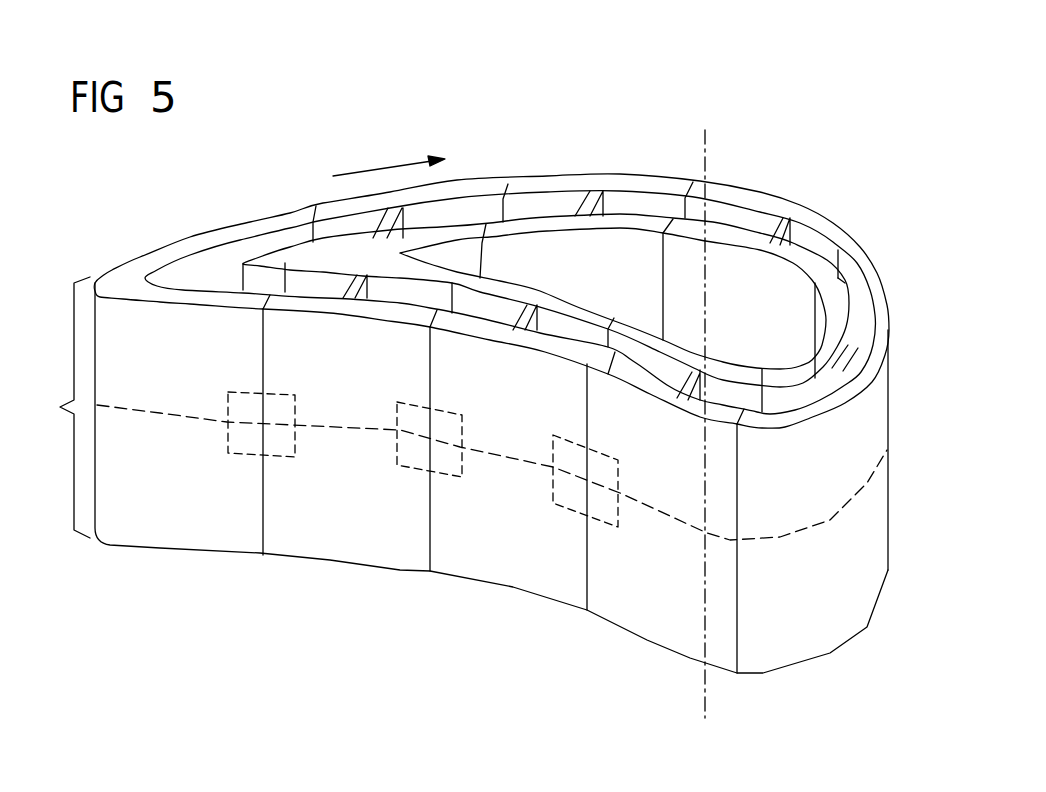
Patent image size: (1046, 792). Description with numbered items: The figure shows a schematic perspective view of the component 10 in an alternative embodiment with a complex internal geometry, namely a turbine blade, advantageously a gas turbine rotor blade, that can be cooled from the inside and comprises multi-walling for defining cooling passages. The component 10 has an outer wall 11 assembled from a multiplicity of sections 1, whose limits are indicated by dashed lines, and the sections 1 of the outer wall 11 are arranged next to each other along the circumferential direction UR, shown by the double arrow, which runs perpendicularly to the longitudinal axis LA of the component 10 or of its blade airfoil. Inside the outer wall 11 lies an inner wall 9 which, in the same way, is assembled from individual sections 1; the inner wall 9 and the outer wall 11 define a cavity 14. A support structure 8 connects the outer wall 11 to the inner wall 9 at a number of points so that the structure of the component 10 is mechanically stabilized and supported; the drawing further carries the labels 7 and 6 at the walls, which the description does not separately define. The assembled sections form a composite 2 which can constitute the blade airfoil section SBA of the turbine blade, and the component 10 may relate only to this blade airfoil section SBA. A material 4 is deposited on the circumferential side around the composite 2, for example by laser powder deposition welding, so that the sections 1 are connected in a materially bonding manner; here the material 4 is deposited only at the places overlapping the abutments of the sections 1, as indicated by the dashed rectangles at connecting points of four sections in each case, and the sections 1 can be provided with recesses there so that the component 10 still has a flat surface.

The sections 1 is at (435, 238).
The composite 2 is at (257, 247).
The material 4 is at (423, 464).
The weld seam 6 is at (457, 462).
The connecting strut 7 is at (807, 253).
The support structure 8 is at (778, 224).
The inner wall 9 is at (845, 283).
The component 10 is at (828, 82).
The outer wall 11 is at (890, 377).
The cavity 14 is at (650, 283).
The circumferential direction UR is at (393, 163).
The longitudinal axis LA is at (707, 152).
The blade airfoil section SBA is at (47, 407).